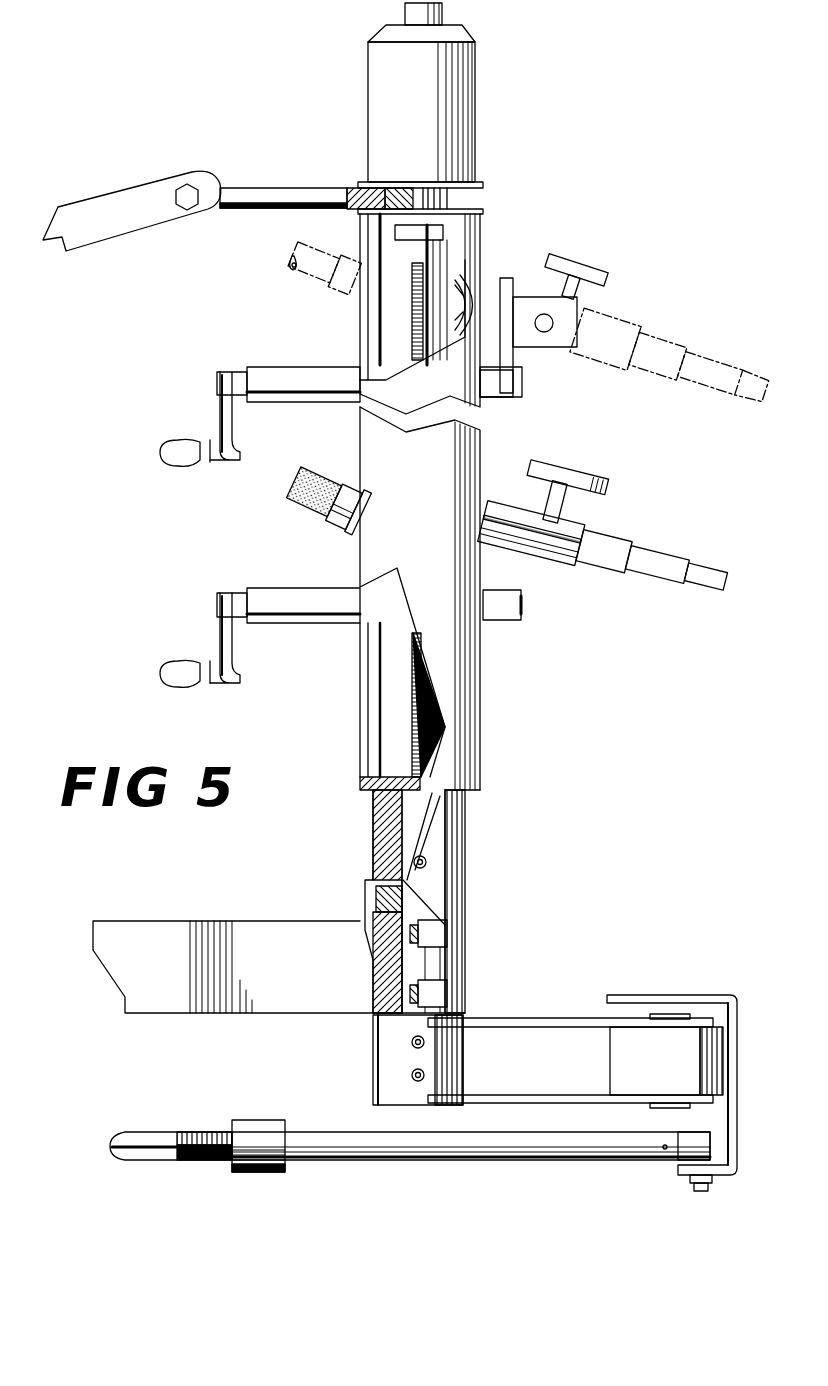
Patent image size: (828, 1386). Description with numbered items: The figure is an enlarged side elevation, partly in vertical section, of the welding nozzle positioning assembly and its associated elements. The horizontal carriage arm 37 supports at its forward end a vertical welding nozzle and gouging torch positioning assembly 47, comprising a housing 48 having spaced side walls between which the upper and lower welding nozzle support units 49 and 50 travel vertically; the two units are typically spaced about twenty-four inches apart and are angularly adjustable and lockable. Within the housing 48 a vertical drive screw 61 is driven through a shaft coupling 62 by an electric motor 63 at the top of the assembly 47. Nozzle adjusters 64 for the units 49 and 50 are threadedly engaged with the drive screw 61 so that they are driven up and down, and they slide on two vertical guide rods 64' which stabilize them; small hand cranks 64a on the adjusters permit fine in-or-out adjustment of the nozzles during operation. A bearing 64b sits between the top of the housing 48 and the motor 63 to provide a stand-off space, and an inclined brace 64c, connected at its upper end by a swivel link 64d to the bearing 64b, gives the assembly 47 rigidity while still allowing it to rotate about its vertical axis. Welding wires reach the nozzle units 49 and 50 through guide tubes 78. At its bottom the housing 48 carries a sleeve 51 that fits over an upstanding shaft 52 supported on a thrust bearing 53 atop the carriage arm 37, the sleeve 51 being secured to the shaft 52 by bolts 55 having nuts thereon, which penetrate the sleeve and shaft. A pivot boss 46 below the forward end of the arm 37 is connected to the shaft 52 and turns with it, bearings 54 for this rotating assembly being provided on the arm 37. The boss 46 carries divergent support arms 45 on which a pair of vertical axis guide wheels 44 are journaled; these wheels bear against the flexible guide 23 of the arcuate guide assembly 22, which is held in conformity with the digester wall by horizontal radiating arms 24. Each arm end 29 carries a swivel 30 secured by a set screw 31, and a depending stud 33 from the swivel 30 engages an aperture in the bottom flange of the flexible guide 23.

The arcuate guide assembly 22 is at (680, 993).
The flexible guide 23 is at (736, 1001).
The horizontal radiating arm 24 is at (156, 1133).
The arm end 29 is at (497, 1160).
The swivel 30 is at (700, 1142).
The set screw 31 is at (664, 1151).
The depending stud 33 is at (706, 1194).
The carriage arm 37 is at (232, 932).
The guide wheel 44 is at (615, 1072).
The support arm 45 is at (520, 1020).
The pivot boss 46 is at (382, 1060).
The welding nozzle and gouging torch positioning assembly 47 is at (350, 424).
The housing 48 is at (467, 640).
The upper welding nozzle support unit 49 is at (600, 300).
The lower welding nozzle support unit 50 is at (585, 540).
The sleeve 51 is at (455, 822).
The upstanding shaft 52 is at (405, 842).
The thrust bearing 53 is at (376, 898).
The bearing 54 is at (450, 932).
The screw 55 is at (430, 864).
The vertical drive screw 61 is at (432, 282).
The shaft coupling 62 is at (486, 213).
The electric motor 63 is at (455, 118).
The nozzle adjuster 64 is at (288, 477).
The vertical guide rod 64' is at (437, 446).
The hand crank 64a is at (178, 440).
The bearing 64b is at (398, 188).
The inclined brace 64c is at (138, 197).
The swivel link 64d is at (322, 190).
The guide tube 78 is at (313, 272).